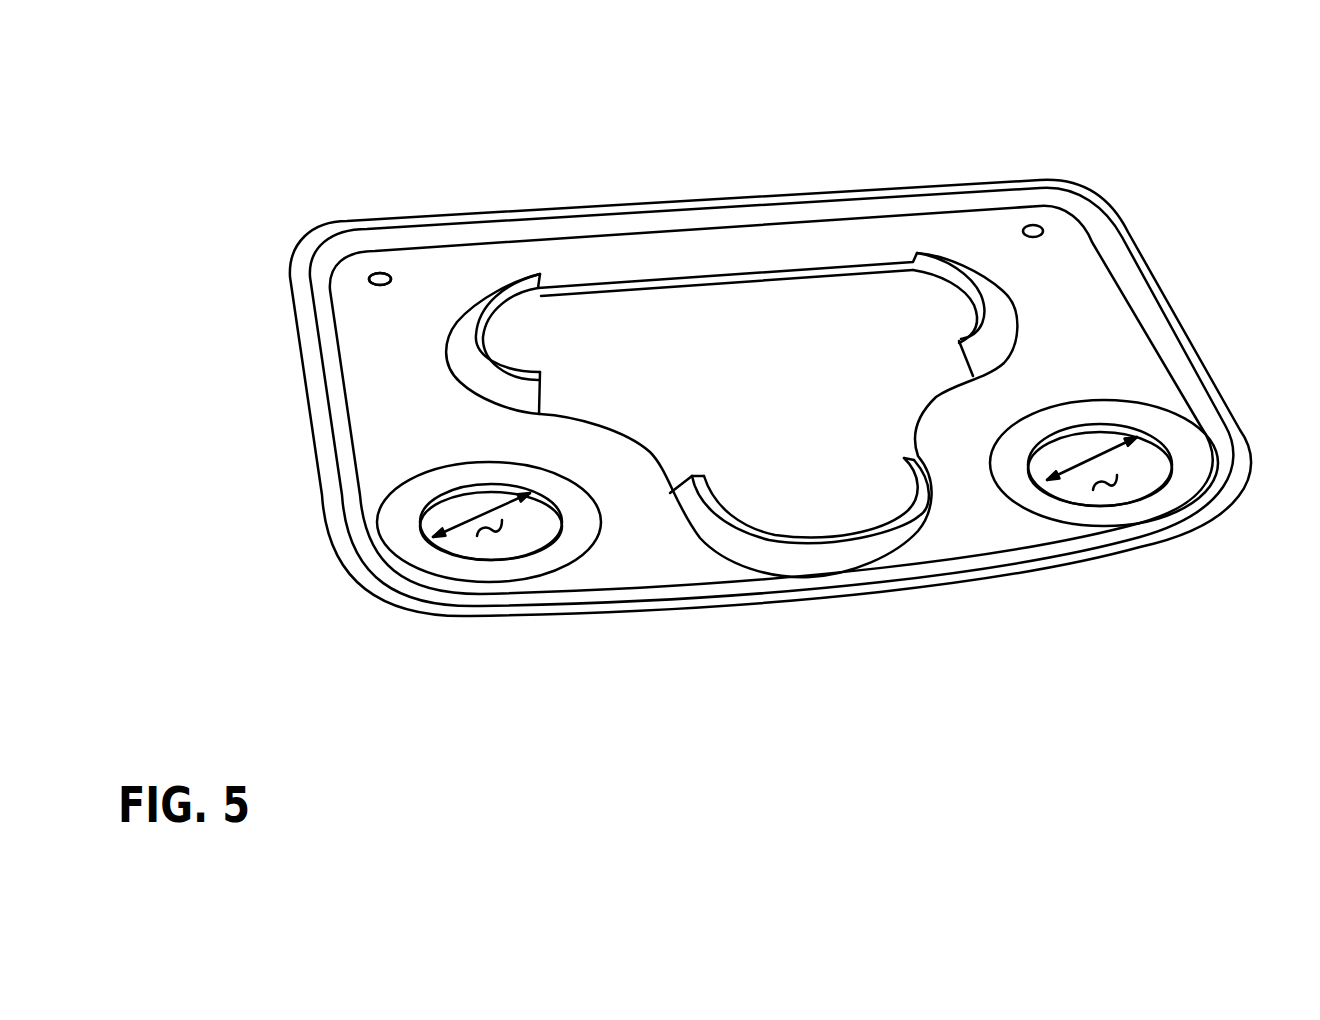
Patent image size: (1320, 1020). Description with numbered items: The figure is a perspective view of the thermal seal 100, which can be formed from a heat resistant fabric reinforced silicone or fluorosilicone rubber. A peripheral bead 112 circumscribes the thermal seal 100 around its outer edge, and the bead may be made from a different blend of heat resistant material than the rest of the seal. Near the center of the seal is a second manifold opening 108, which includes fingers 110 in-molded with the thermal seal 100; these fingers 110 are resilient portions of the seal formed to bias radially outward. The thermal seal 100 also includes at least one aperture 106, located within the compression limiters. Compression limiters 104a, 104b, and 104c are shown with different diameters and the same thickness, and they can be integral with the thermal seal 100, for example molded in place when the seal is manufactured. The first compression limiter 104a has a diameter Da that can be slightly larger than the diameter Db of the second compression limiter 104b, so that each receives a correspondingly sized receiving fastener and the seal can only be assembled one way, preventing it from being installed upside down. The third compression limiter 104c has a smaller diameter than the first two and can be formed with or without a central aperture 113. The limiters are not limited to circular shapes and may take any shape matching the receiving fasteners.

The thermal seal 100 is at (752, 148).
The first compression limiter 104a is at (418, 543).
The second compression limiter 104b is at (1167, 497).
The third compression limiter 104c is at (376, 272).
The aperture 106 is at (490, 535).
The second manifold opening 108 is at (783, 397).
The fingers 110 is at (470, 323).
The peripheral bead 112 is at (1187, 352).
The central aperture 113 is at (388, 275).
The diameter of compression limiter 104a Da is at (473, 497).
The diameter of compression limiter 104b Db is at (1107, 457).